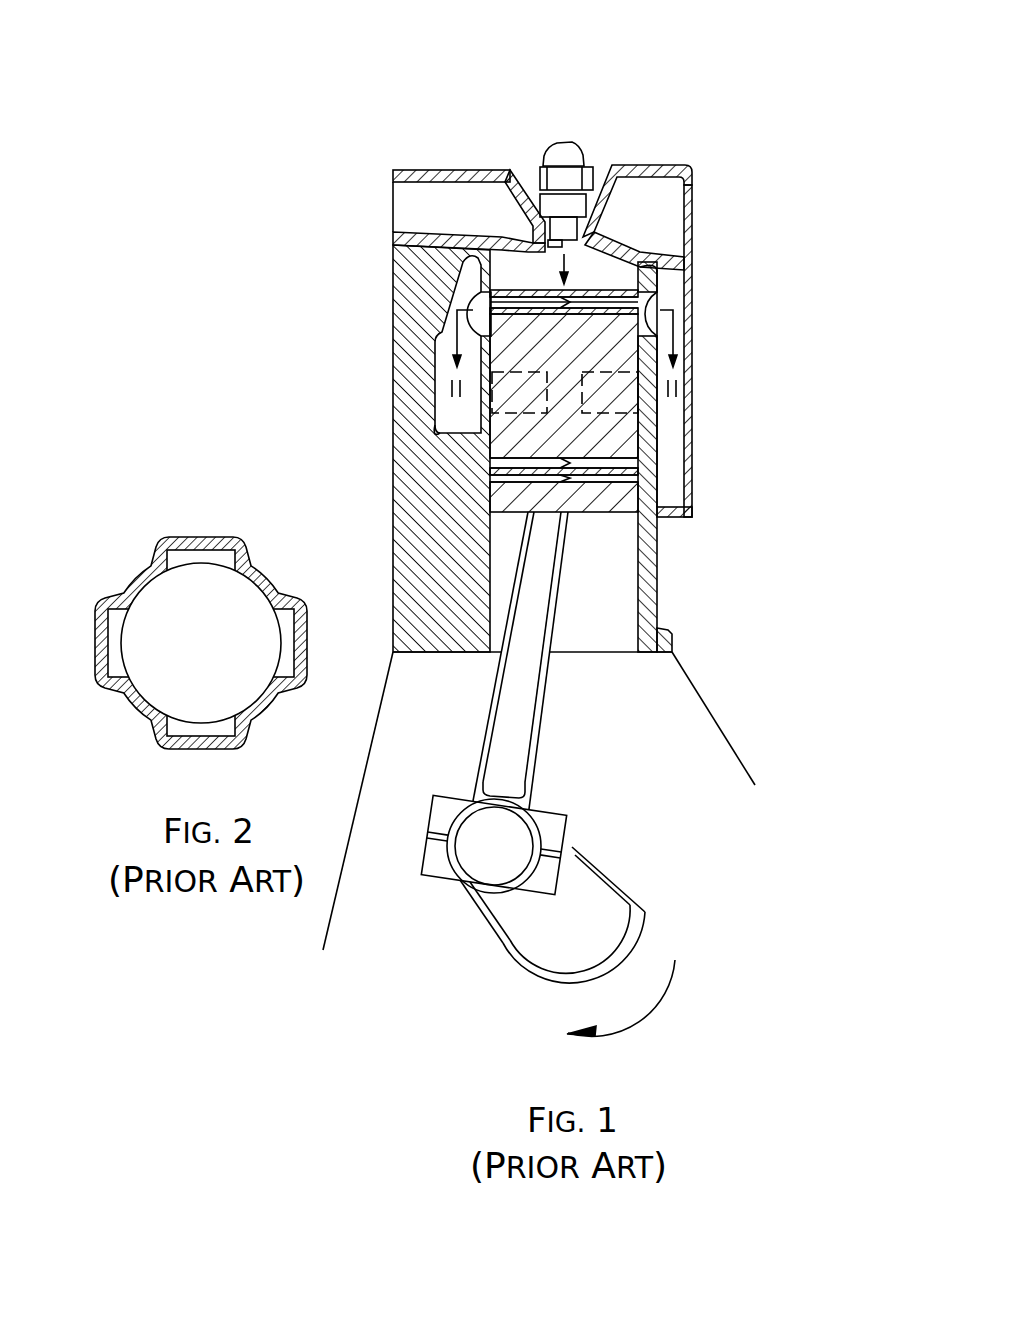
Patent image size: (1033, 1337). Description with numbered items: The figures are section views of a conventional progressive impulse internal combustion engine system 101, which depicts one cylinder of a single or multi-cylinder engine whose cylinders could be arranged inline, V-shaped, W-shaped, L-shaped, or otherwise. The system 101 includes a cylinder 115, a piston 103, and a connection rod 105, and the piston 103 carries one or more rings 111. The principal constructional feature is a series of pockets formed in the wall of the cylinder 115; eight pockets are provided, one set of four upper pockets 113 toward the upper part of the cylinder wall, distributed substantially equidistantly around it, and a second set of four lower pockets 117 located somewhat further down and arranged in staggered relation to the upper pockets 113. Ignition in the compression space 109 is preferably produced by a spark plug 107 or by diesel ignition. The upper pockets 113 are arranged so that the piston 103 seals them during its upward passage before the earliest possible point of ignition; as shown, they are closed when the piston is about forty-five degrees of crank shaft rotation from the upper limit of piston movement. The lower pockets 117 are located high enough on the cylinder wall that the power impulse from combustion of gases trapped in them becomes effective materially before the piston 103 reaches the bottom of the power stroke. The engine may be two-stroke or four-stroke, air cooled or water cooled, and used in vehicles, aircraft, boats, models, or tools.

In FIG. 1, the progressive impulse internal combustion engine system 101 is at (792, 66).
In FIG. 1, the piston 103 is at (640, 410).
In FIG. 1, the connection rod 105 is at (548, 724).
In FIG. 1, the spark plug 107 is at (545, 150).
In FIG. 1, the compression space 109 is at (623, 272).
In FIG. 1, the rings 111 is at (640, 298).
In FIG. 1, the upper pockets 113 is at (470, 302).
In FIG. 2, the upper pockets 113 is at (195, 552).
In FIG. 1, the cylinder 115 is at (690, 505).
In FIG. 2, the cylinder 115 is at (137, 568).
In FIG. 1, the lower pockets 117 is at (475, 433).